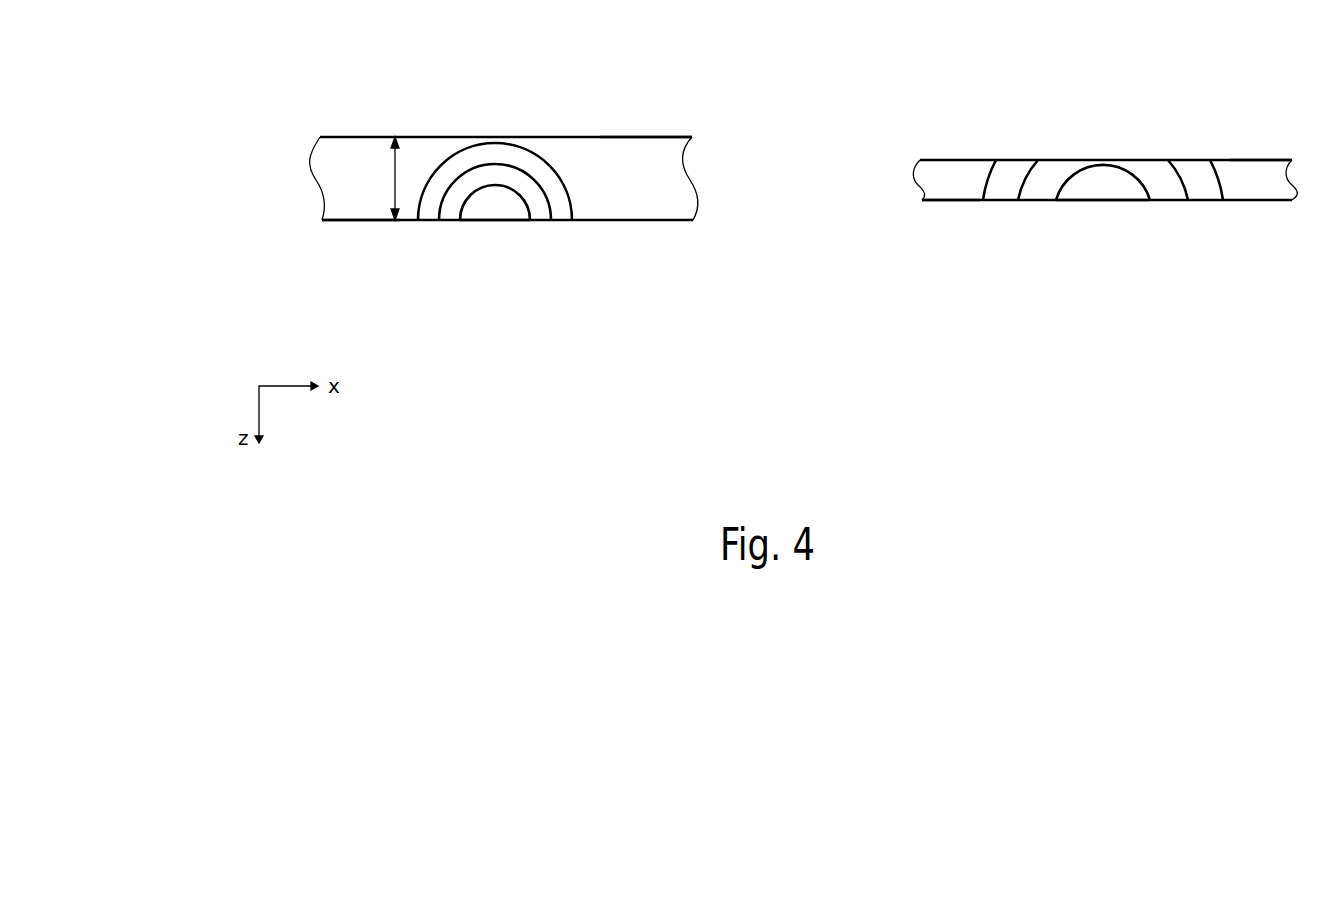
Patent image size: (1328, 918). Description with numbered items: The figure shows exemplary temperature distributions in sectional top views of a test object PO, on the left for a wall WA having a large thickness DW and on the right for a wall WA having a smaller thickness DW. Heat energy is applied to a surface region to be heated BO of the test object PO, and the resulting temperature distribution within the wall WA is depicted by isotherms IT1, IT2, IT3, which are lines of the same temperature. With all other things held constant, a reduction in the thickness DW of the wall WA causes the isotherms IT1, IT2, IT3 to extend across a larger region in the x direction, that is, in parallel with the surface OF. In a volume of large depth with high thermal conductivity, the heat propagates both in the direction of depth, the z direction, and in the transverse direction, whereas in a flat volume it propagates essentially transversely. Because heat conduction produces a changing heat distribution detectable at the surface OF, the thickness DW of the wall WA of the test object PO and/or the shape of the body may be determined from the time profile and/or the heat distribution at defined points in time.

The wall WA is at (340, 150).
The isotherm IT3 is at (460, 148).
The isotherm IT2 is at (497, 163).
The isotherm IT1 is at (492, 187).
The test object PO is at (665, 148).
The surface OF is at (345, 222).
The surface region to be heated BO is at (500, 222).
The thickness of the wall DW is at (379, 178).